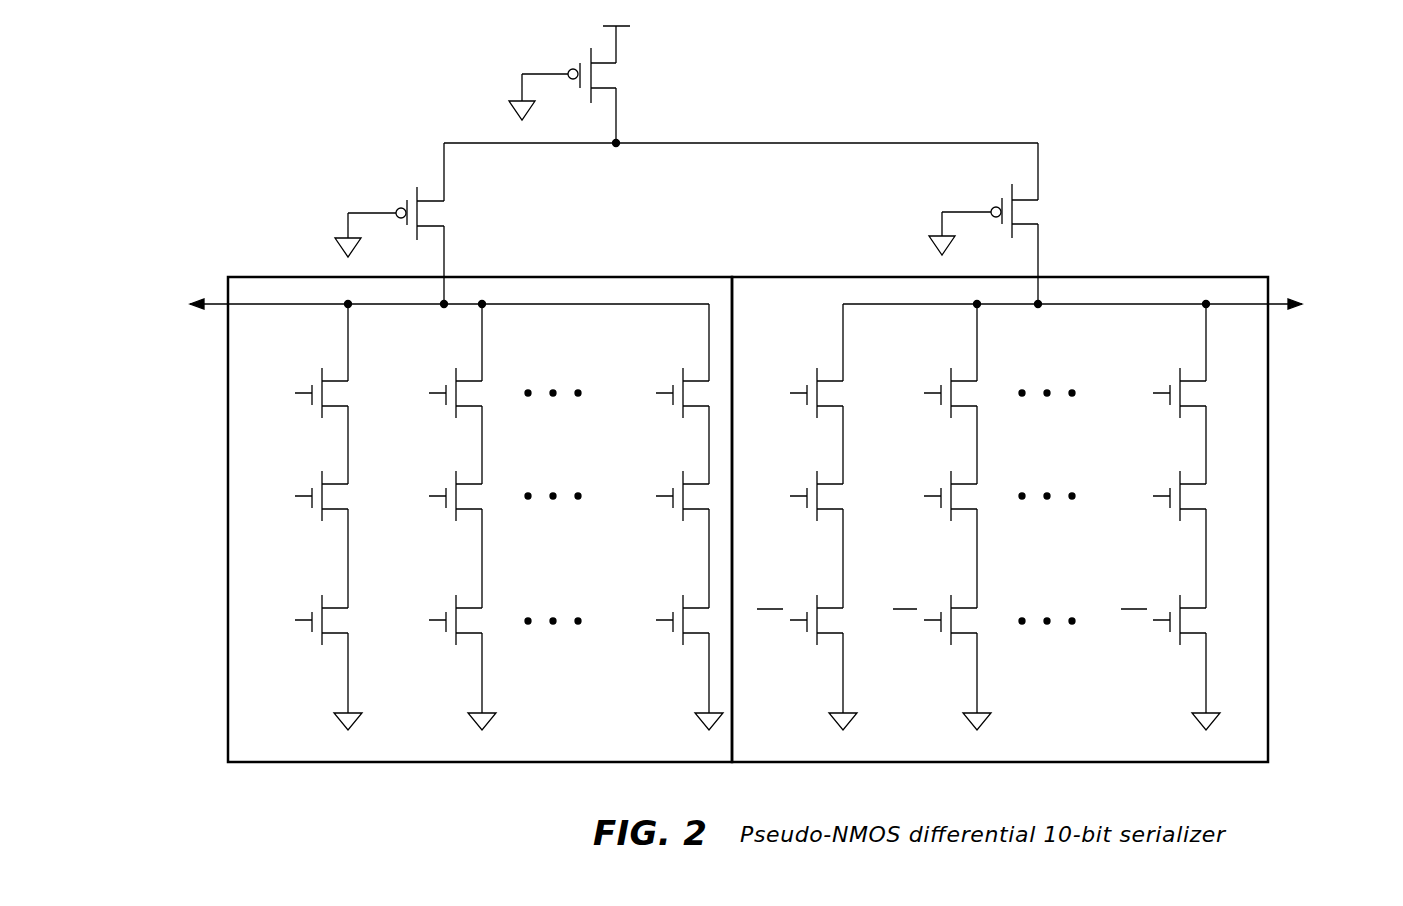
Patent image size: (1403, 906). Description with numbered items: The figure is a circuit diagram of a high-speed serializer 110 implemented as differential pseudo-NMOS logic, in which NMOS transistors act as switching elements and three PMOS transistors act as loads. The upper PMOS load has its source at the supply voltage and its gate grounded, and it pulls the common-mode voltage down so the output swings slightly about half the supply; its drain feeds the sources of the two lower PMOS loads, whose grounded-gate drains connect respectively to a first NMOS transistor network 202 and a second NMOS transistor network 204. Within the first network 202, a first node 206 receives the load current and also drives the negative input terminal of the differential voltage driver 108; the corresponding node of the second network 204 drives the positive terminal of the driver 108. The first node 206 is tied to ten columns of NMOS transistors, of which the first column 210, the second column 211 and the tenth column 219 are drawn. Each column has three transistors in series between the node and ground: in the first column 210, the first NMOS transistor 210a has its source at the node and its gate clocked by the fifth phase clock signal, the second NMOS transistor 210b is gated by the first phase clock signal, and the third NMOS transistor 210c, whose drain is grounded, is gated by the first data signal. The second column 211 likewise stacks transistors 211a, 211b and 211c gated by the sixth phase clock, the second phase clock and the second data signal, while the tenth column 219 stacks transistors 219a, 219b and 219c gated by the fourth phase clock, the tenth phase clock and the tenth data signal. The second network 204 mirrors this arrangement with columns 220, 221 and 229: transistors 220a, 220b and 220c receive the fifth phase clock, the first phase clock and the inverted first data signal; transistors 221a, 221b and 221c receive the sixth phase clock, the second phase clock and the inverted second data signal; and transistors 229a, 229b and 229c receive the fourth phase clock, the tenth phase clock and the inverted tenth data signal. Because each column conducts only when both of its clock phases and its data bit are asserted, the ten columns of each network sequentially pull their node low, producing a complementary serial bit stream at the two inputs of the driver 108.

The high-speed serializer 110 is at (180, 851).
The differential voltage driver 108 is at (747, 271).
The first NMOS transistor network 202 is at (228, 415).
The second NMOS transistor network 204 is at (1268, 430).
The first node 206 is at (305, 303).
The first column 210 is at (304, 550).
The first NMOS transistor 210a is at (322, 371).
The second NMOS transistor 210b is at (322, 474).
The third NMOS transistor 210c is at (322, 598).
The second column 211 is at (439, 550).
The first NMOS transistor 211a is at (456, 371).
The second NMOS transistor 211b is at (456, 474).
The third NMOS transistor 211c is at (456, 598).
The tenth column 219 is at (665, 571).
The first NMOS transistor 219a is at (683, 371).
The second NMOS transistor 219b is at (683, 474).
The third NMOS transistor 219c is at (683, 598).
The first column 220 is at (799, 550).
The first NMOS transistor 220a is at (817, 371).
The second NMOS transistor 220b is at (817, 474).
The third NMOS transistor 220c is at (817, 598).
The second column 221 is at (934, 550).
The first NMOS transistor 221a is at (951, 371).
The second NMOS transistor 221b is at (951, 474).
The third NMOS transistor 221c is at (951, 598).
The tenth column 229 is at (1163, 550).
The first NMOS transistor 229a is at (1180, 371).
The second NMOS transistor 229b is at (1180, 474).
The third NMOS transistor 229c is at (1180, 598).